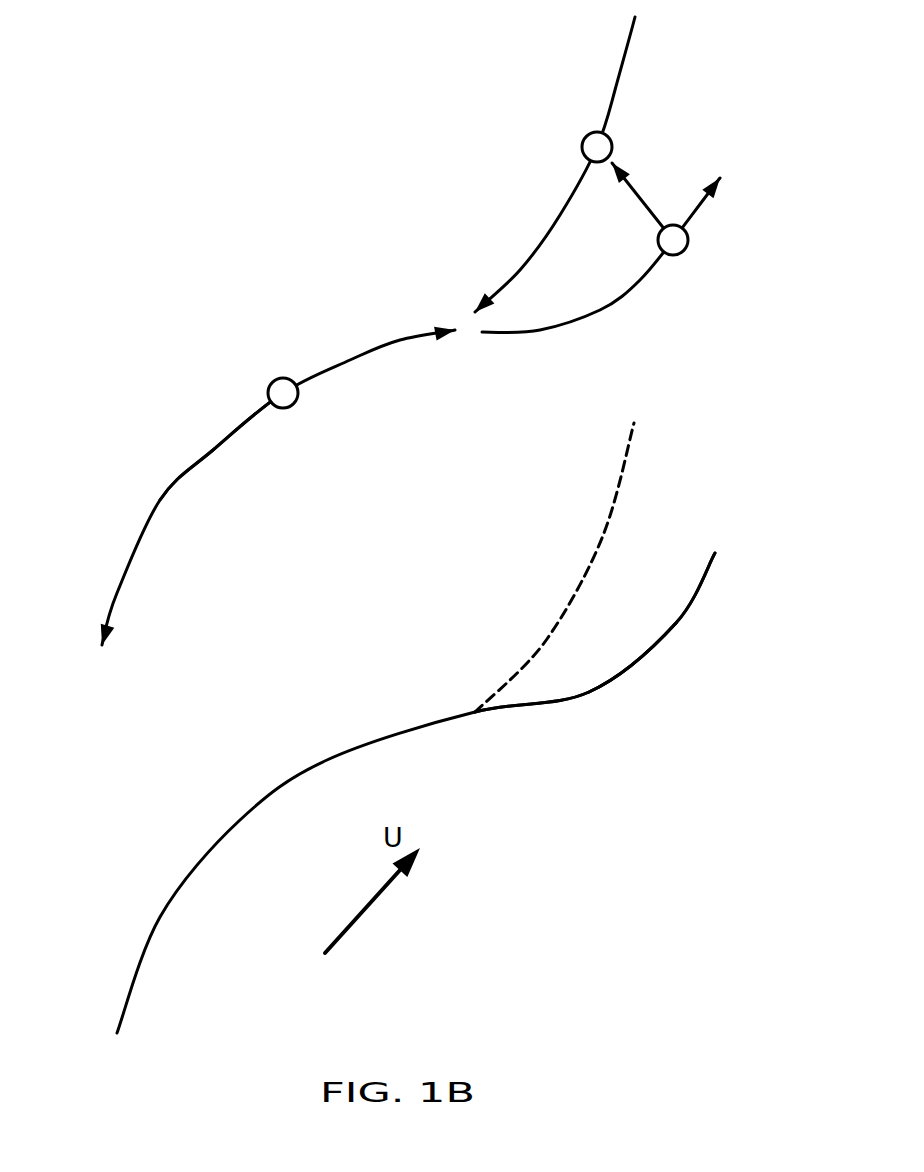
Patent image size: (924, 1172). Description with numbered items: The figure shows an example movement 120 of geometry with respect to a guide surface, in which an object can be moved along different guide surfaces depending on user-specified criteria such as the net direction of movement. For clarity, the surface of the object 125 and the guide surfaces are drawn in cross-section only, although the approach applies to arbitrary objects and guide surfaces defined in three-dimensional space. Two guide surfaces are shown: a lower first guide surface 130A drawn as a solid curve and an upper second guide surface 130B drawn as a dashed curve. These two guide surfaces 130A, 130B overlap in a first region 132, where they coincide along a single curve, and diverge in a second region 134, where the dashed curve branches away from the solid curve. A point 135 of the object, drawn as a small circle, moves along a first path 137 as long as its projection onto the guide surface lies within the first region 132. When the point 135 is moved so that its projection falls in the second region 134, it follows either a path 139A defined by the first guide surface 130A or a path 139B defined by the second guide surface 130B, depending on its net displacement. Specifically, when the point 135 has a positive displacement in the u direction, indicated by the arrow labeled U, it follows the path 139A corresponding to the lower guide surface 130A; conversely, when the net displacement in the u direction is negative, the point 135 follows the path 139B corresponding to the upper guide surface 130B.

The movement 120 is at (258, 176).
The object 125 is at (115, 595).
The first guide surface 130A is at (676, 623).
The second guide surface 130B is at (606, 533).
The first region 132 is at (327, 758).
The second region 134 is at (585, 692).
The point 135 is at (582, 145).
The first path 137 is at (212, 452).
The path defined by first guide surface 139A is at (628, 290).
The path defined by second guide surface 139B is at (628, 55).